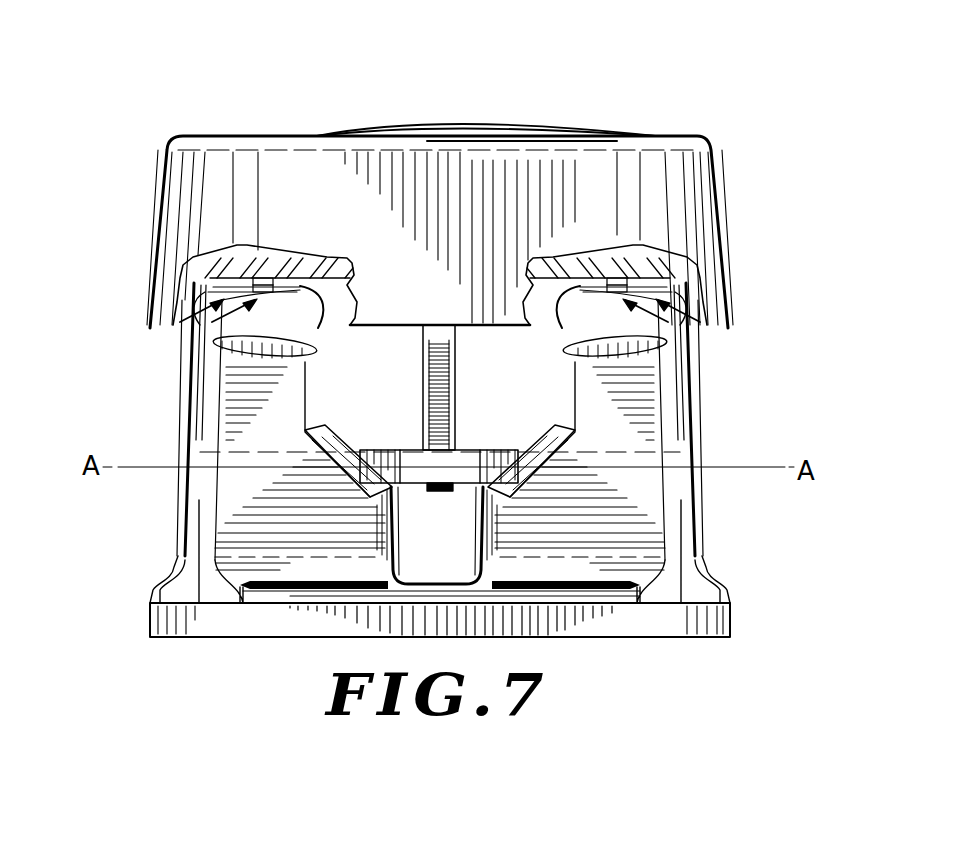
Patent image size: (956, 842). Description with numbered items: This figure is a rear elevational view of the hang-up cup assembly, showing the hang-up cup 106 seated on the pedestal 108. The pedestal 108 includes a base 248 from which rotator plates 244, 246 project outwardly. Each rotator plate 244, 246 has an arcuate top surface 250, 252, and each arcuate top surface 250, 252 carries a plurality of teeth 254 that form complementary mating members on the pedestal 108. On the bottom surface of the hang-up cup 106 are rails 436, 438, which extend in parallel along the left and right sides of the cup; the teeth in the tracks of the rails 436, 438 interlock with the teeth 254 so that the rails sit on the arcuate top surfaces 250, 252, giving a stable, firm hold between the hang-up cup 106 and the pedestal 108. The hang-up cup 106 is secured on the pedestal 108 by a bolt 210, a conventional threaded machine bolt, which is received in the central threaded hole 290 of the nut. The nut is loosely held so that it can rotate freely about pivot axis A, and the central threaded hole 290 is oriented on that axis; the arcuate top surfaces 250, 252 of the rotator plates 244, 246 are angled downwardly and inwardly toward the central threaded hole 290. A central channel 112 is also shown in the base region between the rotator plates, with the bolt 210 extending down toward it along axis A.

The hang-up cup 106 is at (677, 132).
The pedestal 108 is at (708, 528).
The central channel 112 is at (468, 488).
The bolt 210 is at (455, 400).
The rotator plate 244 is at (678, 428).
The rotator plate 246 is at (203, 423).
The base 248 is at (172, 640).
The arcuate top surface 250 is at (662, 360).
The arcuate top surface 252 is at (248, 333).
The teeth 254 is at (323, 337).
The central threaded hole 290 is at (423, 448).
The rail 436 is at (660, 318).
The rail 438 is at (218, 312).